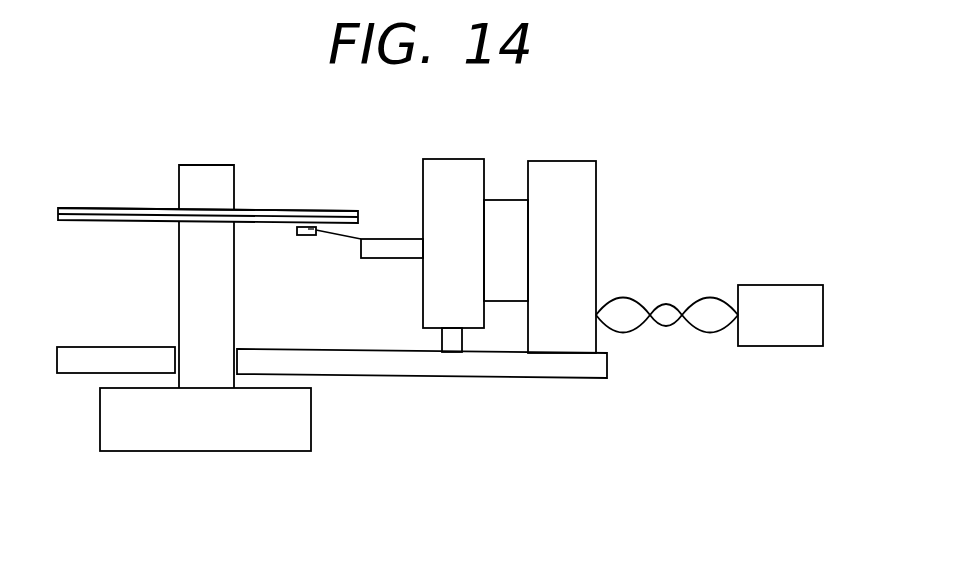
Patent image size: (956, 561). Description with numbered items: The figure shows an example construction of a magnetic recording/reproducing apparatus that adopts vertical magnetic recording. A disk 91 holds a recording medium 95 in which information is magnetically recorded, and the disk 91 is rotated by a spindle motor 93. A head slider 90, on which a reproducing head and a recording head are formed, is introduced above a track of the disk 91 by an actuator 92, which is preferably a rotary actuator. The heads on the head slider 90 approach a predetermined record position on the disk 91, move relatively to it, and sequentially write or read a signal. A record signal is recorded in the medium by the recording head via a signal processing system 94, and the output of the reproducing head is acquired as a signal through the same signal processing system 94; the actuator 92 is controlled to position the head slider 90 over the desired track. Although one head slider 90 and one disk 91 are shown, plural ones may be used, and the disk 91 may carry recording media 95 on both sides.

The head slider 90 is at (303, 236).
The disk 91 is at (92, 221).
The actuator 92 is at (457, 158).
The spindle motor 93 is at (312, 424).
The signal processing system 94 is at (782, 283).
The recording medium 95 is at (93, 208).